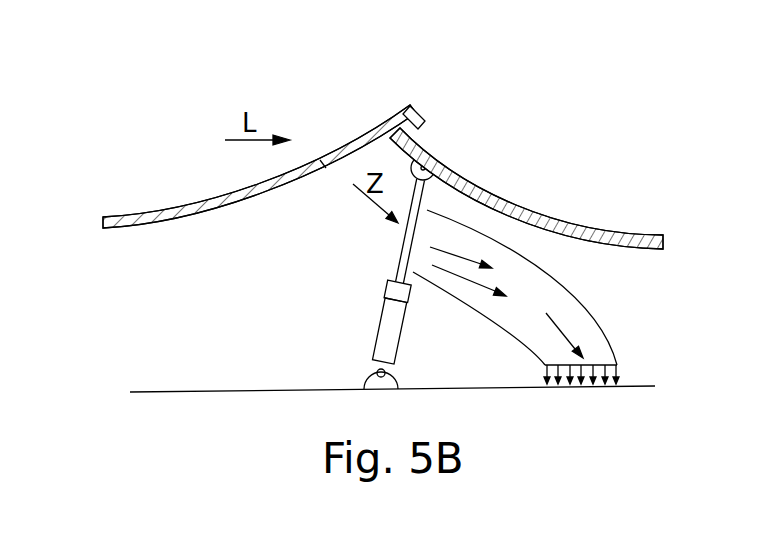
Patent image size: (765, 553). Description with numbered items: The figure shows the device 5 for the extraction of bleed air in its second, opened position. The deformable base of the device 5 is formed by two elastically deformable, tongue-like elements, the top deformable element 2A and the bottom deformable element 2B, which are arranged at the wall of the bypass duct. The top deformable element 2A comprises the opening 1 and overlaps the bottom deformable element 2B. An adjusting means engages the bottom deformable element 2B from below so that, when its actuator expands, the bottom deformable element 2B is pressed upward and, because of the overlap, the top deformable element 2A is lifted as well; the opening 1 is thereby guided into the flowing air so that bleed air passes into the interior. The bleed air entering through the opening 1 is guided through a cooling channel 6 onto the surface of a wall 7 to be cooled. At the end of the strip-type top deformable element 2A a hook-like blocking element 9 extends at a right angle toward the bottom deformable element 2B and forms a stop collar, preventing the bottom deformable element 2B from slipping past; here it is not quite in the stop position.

The opening 1 is at (325, 160).
The top deformable element 2A is at (259, 189).
The bottom deformable element 2B is at (526, 220).
The device for the extraction of bleed air 5 is at (414, 88).
The cooling channel 6 is at (601, 320).
The wall 7 is at (584, 404).
The blocking element 9 is at (418, 122).